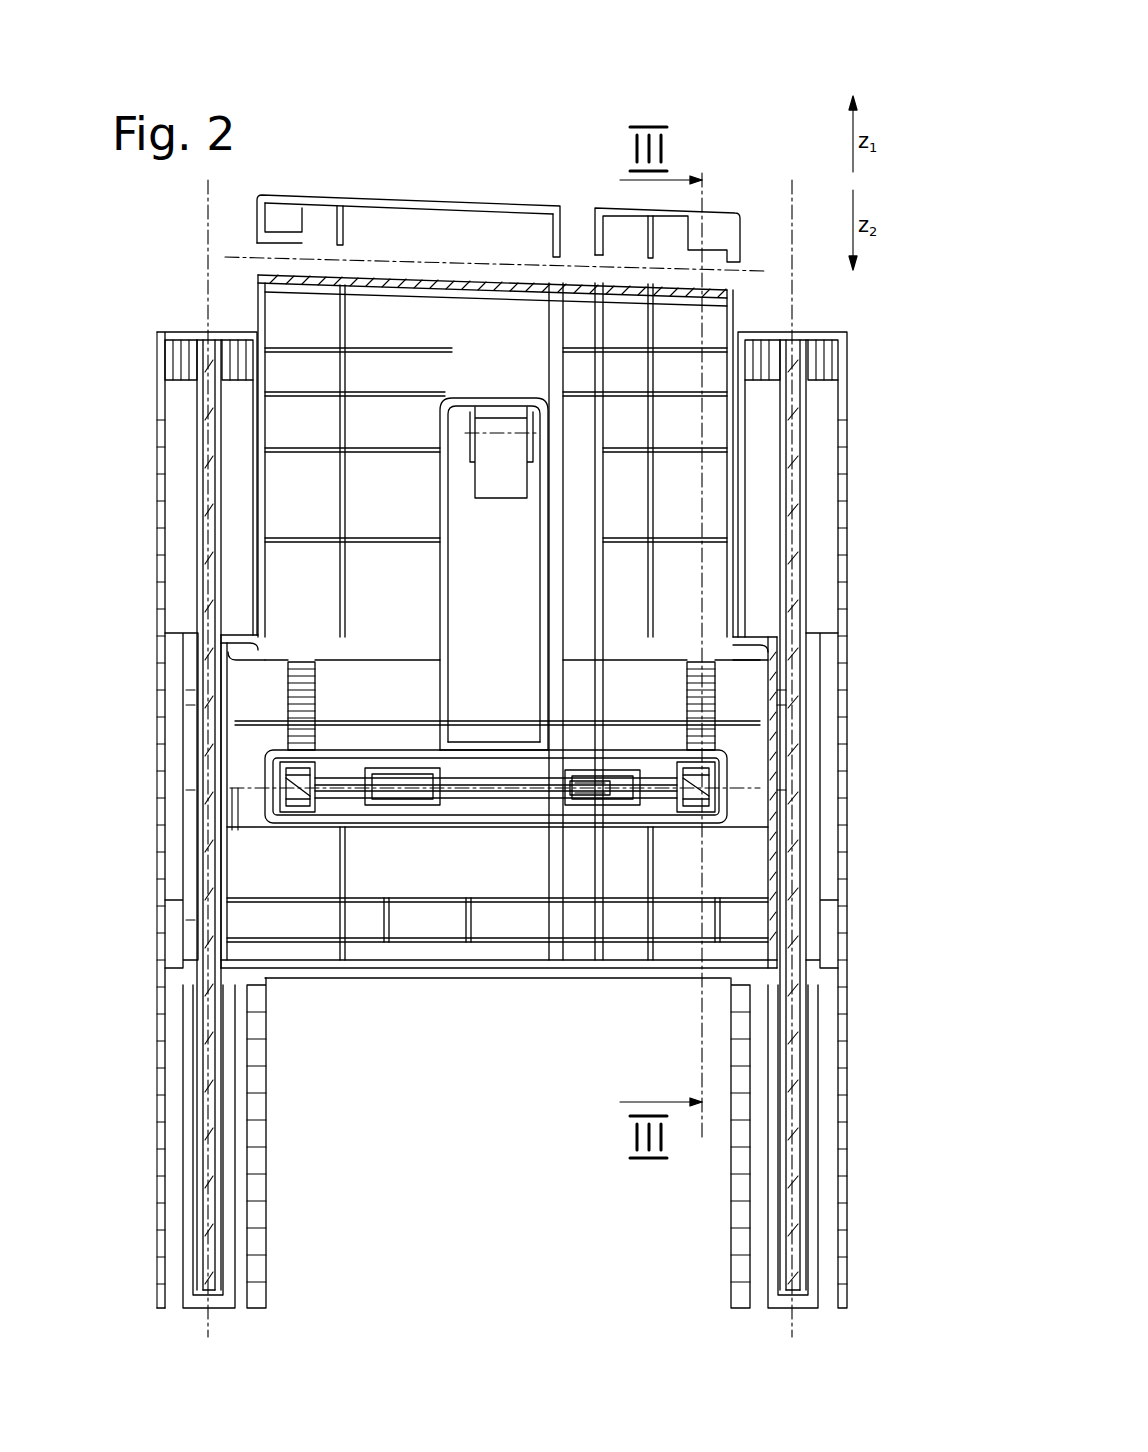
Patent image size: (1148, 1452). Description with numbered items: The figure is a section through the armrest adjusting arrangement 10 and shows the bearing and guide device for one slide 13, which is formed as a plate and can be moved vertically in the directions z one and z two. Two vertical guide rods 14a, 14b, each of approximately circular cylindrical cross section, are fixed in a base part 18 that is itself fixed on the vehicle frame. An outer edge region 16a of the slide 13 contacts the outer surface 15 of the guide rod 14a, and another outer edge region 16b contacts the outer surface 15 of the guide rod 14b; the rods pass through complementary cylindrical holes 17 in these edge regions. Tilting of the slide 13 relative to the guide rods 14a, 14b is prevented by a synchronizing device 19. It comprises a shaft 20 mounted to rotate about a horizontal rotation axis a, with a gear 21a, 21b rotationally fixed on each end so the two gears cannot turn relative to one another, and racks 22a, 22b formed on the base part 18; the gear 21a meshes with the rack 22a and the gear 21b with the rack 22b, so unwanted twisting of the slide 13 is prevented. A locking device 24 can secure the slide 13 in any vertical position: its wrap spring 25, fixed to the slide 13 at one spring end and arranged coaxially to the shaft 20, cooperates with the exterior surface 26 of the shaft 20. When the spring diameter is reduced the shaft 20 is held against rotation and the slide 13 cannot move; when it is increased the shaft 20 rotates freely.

The adjusting device 10 is at (775, 92).
The slide 13 is at (730, 218).
The guide rod 14a is at (802, 490).
The guide rod 14b is at (196, 455).
The outer surface 15 is at (190, 505).
The outer edge region 16a is at (820, 663).
The outer edge region 16b is at (176, 665).
The cylindrical hole 17 is at (232, 790).
The base part 18 is at (158, 882).
The synchronizing device 19 is at (727, 827).
The shaft 20 is at (485, 800).
The gear 21a is at (693, 815).
The gear 21b is at (296, 820).
The rack 22a is at (713, 700).
The rack 22b is at (296, 708).
The locking device 24 is at (620, 815).
The wrap spring 25 is at (590, 810).
The exterior surface 26 is at (452, 800).
The rotation axis a is at (232, 828).